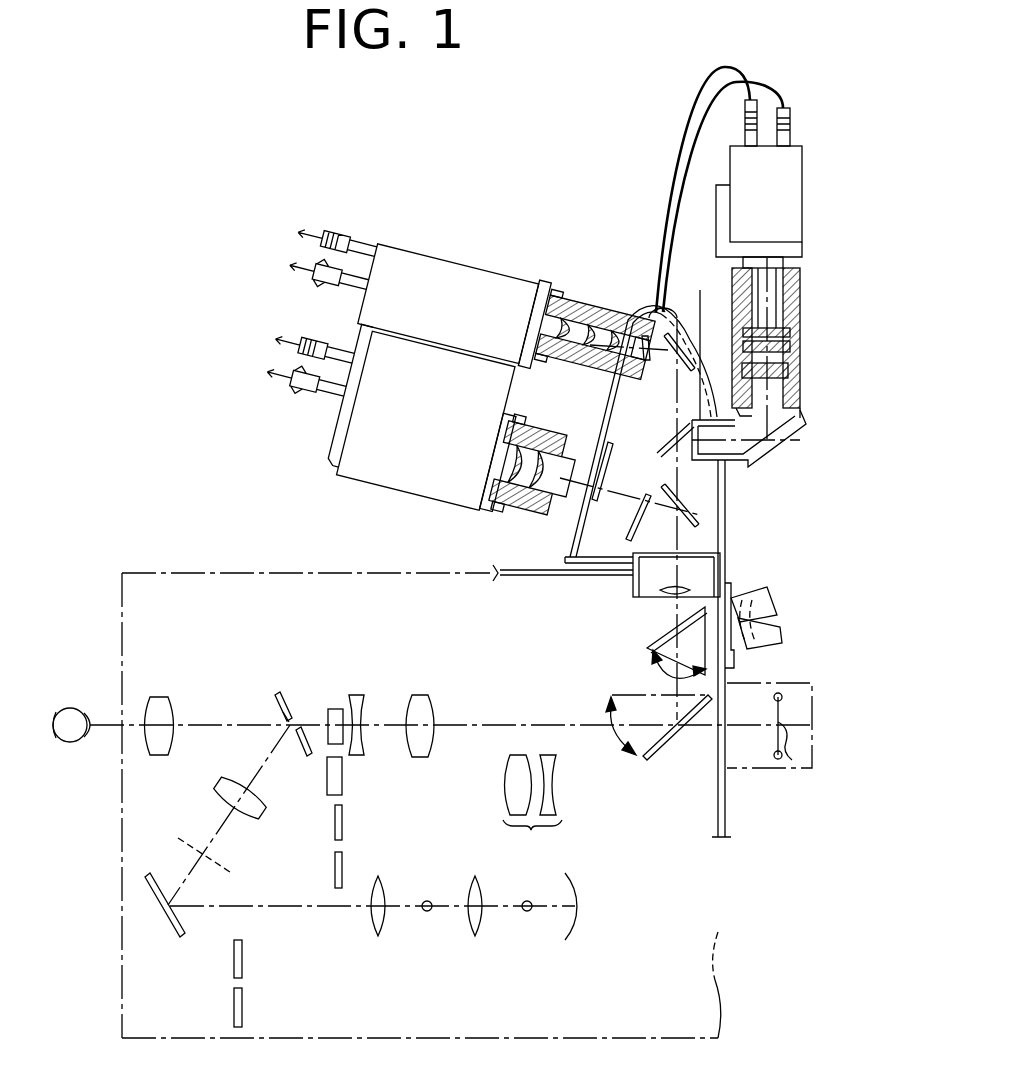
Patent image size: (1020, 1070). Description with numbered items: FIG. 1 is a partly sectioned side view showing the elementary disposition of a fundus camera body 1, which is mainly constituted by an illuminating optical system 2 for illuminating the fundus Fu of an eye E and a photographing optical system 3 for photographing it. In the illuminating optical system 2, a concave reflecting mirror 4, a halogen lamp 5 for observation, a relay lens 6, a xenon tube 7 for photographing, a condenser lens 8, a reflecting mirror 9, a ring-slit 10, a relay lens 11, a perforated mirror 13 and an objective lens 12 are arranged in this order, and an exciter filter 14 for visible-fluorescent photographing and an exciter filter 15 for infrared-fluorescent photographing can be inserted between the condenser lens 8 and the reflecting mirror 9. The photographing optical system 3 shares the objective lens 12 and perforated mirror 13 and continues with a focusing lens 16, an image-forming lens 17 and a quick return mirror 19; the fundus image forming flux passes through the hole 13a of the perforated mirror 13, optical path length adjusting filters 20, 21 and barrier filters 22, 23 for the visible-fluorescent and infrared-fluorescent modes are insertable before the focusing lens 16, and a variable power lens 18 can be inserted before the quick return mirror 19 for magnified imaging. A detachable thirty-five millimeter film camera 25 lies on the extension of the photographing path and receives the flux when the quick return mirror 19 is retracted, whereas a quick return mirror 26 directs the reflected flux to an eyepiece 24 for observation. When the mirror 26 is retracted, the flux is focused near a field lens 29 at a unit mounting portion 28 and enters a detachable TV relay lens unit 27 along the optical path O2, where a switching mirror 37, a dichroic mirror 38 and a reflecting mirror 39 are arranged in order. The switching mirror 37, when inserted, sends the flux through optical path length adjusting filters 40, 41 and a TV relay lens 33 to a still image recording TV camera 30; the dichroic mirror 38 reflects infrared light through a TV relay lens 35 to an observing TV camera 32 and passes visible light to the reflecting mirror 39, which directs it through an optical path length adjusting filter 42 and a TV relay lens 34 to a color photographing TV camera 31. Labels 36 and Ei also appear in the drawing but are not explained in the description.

The fundus camera body 1 is at (228, 572).
The illuminating optical system 2 is at (428, 890).
The photographing optical system 3 is at (510, 714).
The concave reflecting mirror 4 is at (575, 896).
The halogen lamp 5 is at (527, 912).
The relay lens 6 is at (475, 936).
The xenon tube 7 is at (427, 912).
The condenser lens 8 is at (376, 936).
The reflecting mirror 9 is at (170, 938).
The ring-slit 10 is at (191, 845).
The relay lens 11 is at (218, 795).
The objective lens 12 is at (160, 700).
The perforated mirror 13 is at (285, 698).
The hole of perforated mirror 13a is at (285, 720).
The exciter filter for visible-fluorescent photographing 14 is at (242, 960).
The exciter filter for infrared-fluorescent photographing 15 is at (242, 1006).
The focusing lens 16 is at (358, 696).
The image-forming lens 17 is at (422, 700).
The variable power lens 18 is at (532, 807).
The quick return mirror 19 is at (665, 740).
The optical path length adjusting filter 20 is at (336, 708).
The optical path length adjusting filter 21 is at (342, 778).
The barrier filter for visible-fluorescent photographing mode 22 is at (342, 814).
The barrier filter for infrared-fluorescent photographing mode 23 is at (342, 868).
The eyepiece 24 is at (778, 604).
The 35 mm film camera 25 is at (765, 683).
The quick return mirror 26 is at (648, 647).
The TV relay lens unit 27 is at (566, 548).
The unit mounting portion 28 is at (716, 571).
The field lens 29 is at (660, 599).
The still image recording TV camera 30 is at (410, 483).
The color photographing TV camera 31 is at (453, 278).
The observing TV camera 32 is at (790, 167).
The TV relay lens 33 is at (563, 454).
The TV relay lens 34 is at (587, 312).
The TV relay lens 35 is at (792, 380).
The elbow mirror unit 36 is at (701, 486).
The switching mirror 37 is at (663, 525).
The dichroic mirror 38 is at (684, 420).
The reflecting mirror 39 is at (670, 327).
The optical path length adjusting filter 40 is at (626, 502).
The optical path length adjusting filter 41 is at (612, 445).
The optical path length adjusting filter 42 is at (648, 363).
The eye E is at (86, 708).
The fundus Fu is at (47, 714).
The examiner's eye Ei is at (783, 757).
The optical path O2 is at (737, 545).